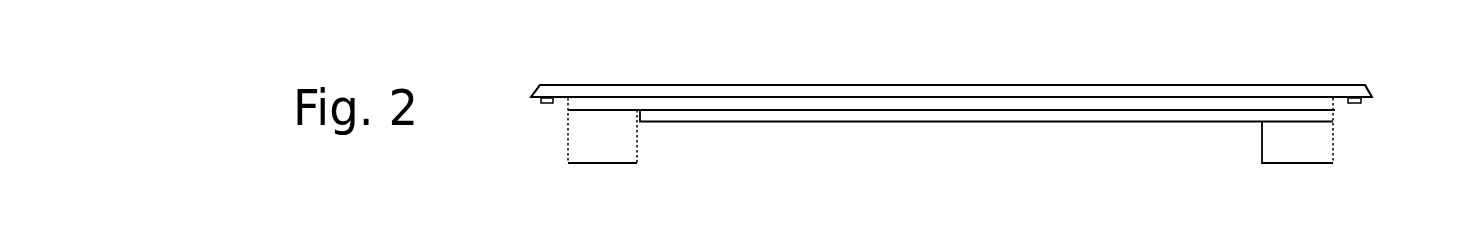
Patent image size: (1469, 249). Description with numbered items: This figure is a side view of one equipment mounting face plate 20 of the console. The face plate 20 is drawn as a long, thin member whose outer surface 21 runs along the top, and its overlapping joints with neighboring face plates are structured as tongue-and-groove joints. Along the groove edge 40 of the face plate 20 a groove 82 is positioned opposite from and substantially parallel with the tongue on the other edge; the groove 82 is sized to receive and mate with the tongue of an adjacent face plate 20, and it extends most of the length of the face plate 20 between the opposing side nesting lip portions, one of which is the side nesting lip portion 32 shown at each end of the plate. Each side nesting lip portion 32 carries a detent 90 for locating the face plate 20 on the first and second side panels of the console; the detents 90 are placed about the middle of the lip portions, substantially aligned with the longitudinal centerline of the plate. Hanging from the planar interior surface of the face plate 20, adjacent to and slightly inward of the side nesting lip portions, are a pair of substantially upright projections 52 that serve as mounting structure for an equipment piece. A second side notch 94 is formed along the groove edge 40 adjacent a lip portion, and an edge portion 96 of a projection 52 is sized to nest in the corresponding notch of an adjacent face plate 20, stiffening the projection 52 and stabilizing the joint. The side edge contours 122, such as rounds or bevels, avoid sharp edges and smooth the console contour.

The face plate 20 is at (875, 122).
The outer surface 21 is at (778, 85).
The side nesting lip portion 32 is at (528, 98).
The groove edge 40 is at (688, 97).
The upright projection 52 is at (568, 150).
The groove 82 is at (732, 105).
The detent 90 is at (543, 105).
The second side notch 94 is at (603, 110).
The edge portion 96 is at (1287, 148).
The side edge contour 122 is at (536, 89).